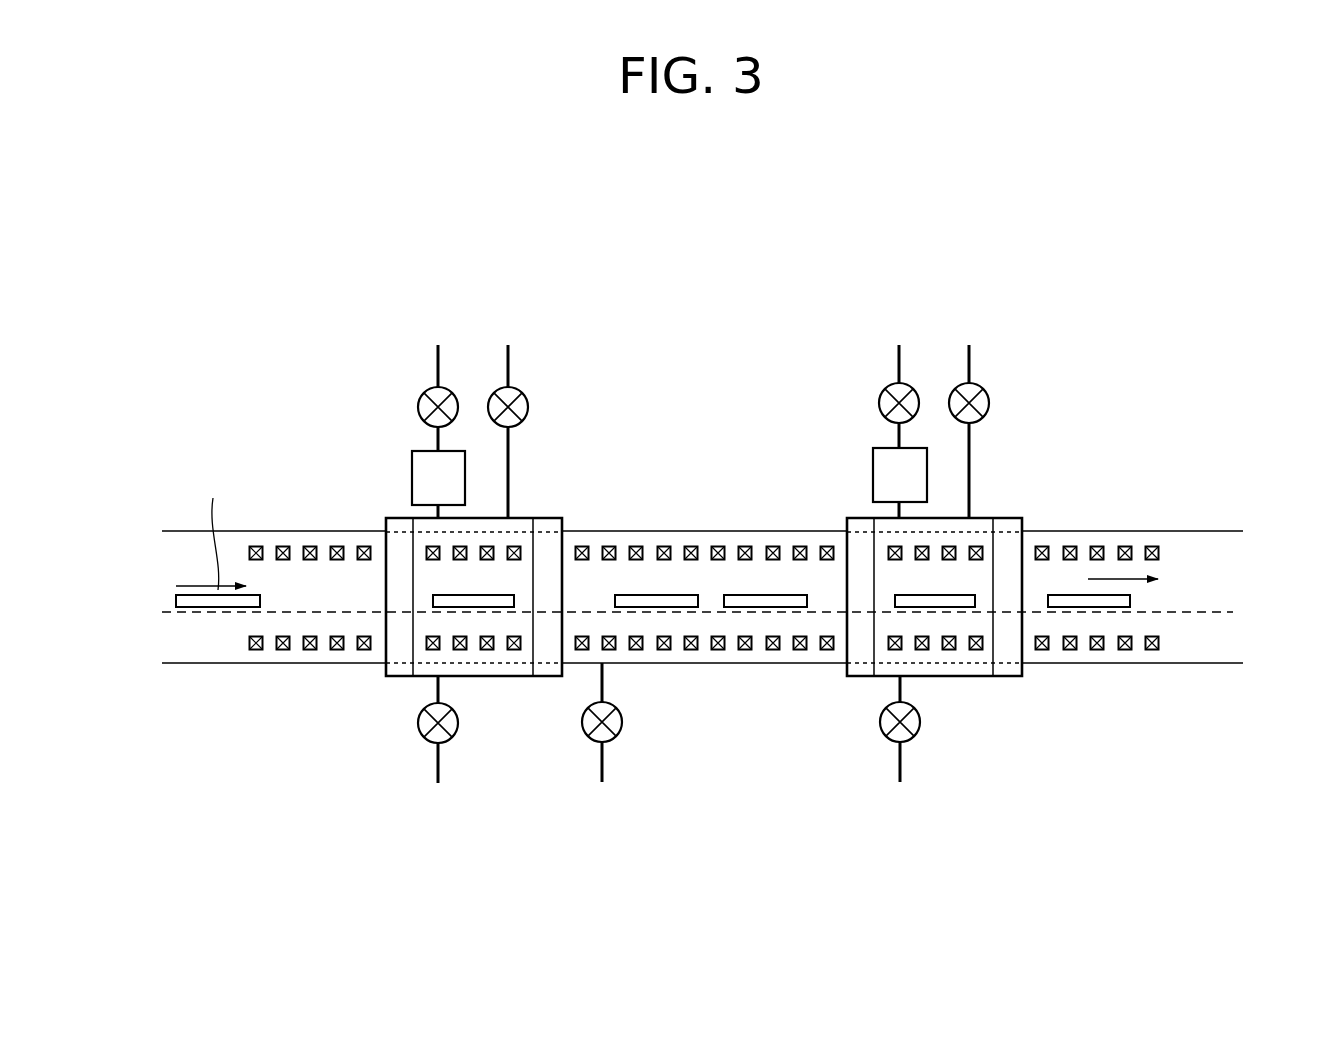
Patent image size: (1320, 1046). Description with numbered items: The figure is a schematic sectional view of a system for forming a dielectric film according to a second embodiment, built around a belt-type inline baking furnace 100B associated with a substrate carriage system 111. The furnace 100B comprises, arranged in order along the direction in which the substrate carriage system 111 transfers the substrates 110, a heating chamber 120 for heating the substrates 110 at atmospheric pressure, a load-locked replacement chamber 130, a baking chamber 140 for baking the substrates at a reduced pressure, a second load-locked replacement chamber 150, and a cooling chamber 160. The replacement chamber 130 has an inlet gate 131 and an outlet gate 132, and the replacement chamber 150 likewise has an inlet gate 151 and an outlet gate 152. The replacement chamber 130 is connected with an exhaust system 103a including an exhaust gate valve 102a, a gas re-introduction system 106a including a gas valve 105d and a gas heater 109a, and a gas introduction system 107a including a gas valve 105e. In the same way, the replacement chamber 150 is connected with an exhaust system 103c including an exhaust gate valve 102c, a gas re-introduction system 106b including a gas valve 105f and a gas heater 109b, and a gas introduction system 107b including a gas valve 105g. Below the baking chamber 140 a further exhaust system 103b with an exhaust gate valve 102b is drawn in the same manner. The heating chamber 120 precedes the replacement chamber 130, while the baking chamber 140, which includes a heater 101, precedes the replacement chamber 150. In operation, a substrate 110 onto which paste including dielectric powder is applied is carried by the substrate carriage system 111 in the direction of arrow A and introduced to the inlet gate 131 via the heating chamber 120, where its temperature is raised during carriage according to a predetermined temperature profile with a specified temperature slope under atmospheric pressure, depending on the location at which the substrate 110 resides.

The inline baking furnace 100B is at (752, 242).
The heater 101 is at (610, 545).
The exhaust gate valve 102a is at (430, 745).
The exhaust valve 102b is at (593, 743).
The exhaust gate valve 102c is at (890, 743).
The exhaust system 103a is at (438, 790).
The exhaust pipe 103b is at (602, 788).
The exhaust system 103c is at (900, 788).
The gas valve 105d is at (423, 393).
The gas valve 105e is at (520, 388).
The gas valve 105f is at (887, 390).
The gas valve 105g is at (983, 388).
The gas re-introduction system 106a is at (438, 350).
The gas re-introduction system 106b is at (899, 345).
The gas introduction system 107a is at (508, 342).
The gas introduction system 107b is at (969, 342).
The gas heater 109a is at (410, 455).
The gas heater 109b is at (870, 452).
The substrate 110 is at (217, 618).
The substrate carriage system 111 is at (1170, 610).
The heating chamber 120 is at (277, 667).
The replacement chamber 130 is at (473, 678).
The inlet gate 131 is at (397, 637).
The outlet gate 132 is at (547, 555).
The baking chamber 140 is at (667, 670).
The replacement chamber 150 is at (935, 675).
The inlet gate 151 is at (858, 633).
The outlet gate 152 is at (1008, 553).
The cooling chamber 160 is at (1070, 665).